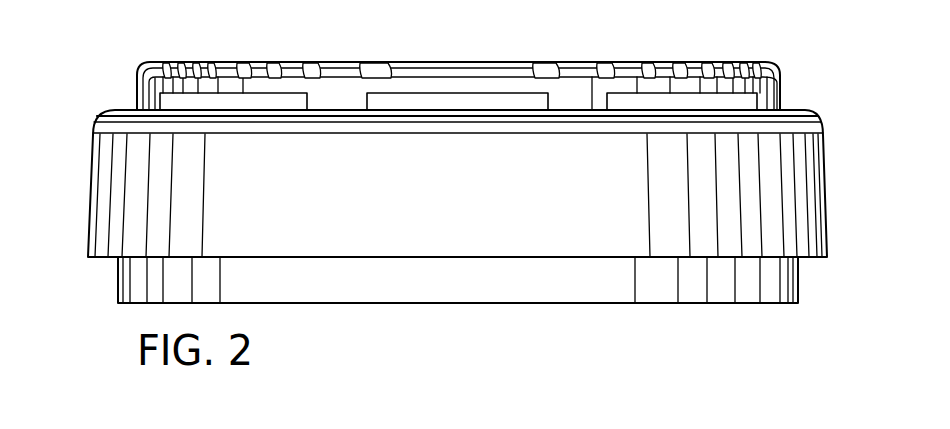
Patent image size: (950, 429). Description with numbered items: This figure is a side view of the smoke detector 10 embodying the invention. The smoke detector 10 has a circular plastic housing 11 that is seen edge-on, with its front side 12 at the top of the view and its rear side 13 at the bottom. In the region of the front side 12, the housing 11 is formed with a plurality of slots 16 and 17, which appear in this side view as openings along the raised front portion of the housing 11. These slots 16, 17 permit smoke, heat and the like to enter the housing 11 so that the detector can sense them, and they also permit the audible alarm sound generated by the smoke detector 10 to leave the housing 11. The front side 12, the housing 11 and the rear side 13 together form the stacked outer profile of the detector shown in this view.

The smoke detector 10 is at (790, 51).
The housing 11 is at (94, 119).
The front side 12 is at (497, 63).
The rear side 13 is at (467, 304).
The slots 16 is at (646, 68).
The slots 17 is at (683, 91).